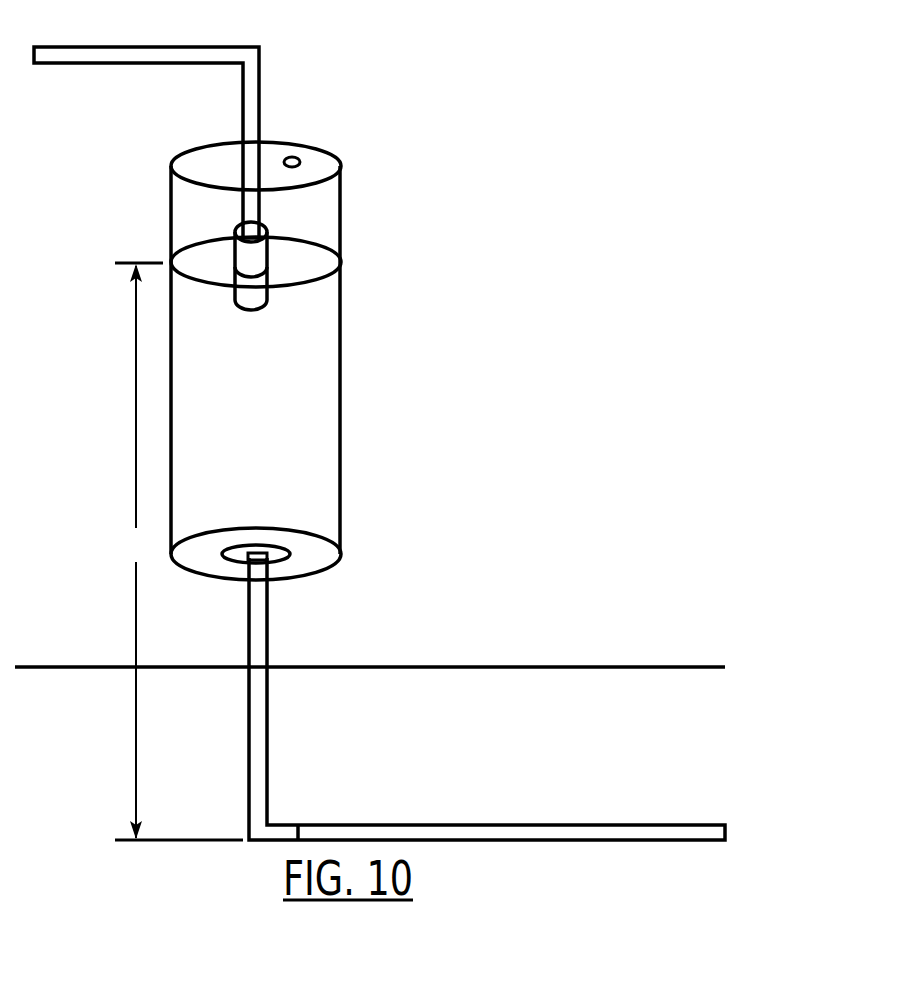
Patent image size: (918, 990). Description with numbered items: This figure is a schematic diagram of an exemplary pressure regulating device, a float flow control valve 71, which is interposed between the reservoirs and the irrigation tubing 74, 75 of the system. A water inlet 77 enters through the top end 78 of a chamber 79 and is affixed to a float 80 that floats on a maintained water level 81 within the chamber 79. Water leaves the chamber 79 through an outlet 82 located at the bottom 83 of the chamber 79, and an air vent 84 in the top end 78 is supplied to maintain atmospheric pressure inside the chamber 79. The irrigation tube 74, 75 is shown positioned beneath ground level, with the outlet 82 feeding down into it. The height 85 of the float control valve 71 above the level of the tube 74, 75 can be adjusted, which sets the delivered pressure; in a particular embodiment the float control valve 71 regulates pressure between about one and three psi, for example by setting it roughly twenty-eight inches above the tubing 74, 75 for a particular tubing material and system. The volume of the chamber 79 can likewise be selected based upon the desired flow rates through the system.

The float flow control valve 71 is at (370, 477).
The water inlet 77 is at (260, 97).
The top end 78 is at (334, 164).
The chamber 79 is at (328, 364).
The float 80 is at (267, 241).
The maintained water level 81 is at (340, 262).
The outlet 82 is at (273, 570).
The bottom 83 is at (323, 555).
The air vent 84 is at (295, 157).
The height 85 is at (179, 551).
The tubing 74 is at (487, 732).
The tubing 75 is at (507, 846).